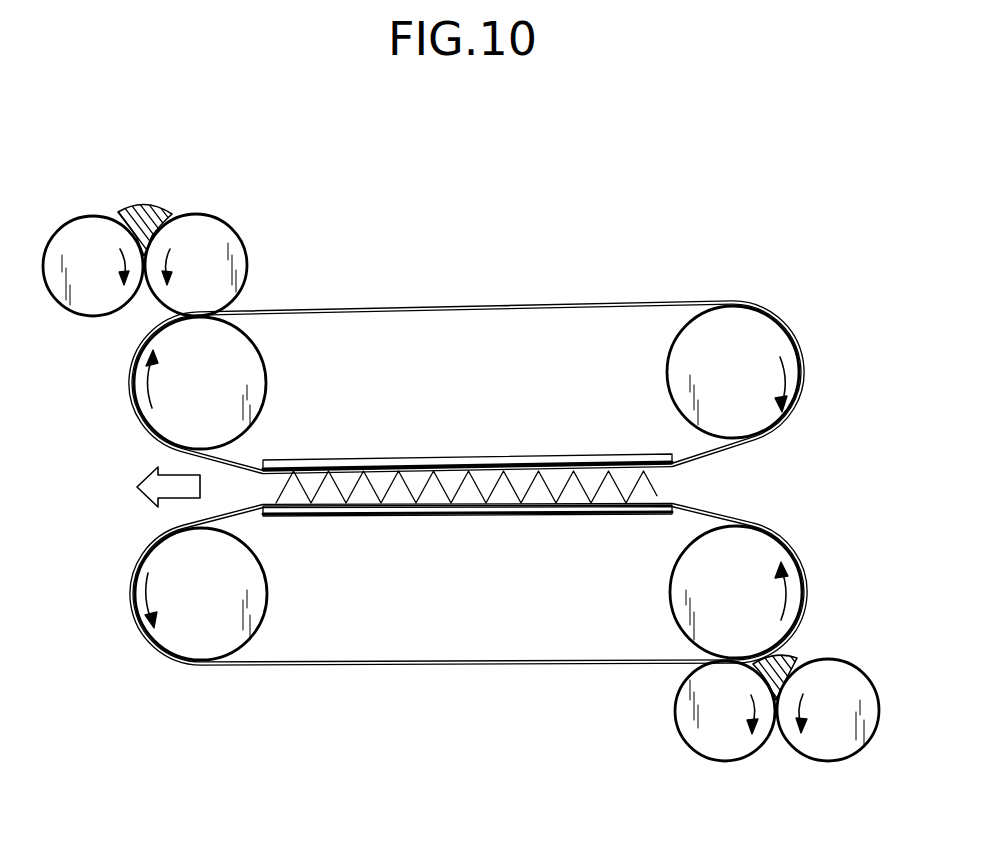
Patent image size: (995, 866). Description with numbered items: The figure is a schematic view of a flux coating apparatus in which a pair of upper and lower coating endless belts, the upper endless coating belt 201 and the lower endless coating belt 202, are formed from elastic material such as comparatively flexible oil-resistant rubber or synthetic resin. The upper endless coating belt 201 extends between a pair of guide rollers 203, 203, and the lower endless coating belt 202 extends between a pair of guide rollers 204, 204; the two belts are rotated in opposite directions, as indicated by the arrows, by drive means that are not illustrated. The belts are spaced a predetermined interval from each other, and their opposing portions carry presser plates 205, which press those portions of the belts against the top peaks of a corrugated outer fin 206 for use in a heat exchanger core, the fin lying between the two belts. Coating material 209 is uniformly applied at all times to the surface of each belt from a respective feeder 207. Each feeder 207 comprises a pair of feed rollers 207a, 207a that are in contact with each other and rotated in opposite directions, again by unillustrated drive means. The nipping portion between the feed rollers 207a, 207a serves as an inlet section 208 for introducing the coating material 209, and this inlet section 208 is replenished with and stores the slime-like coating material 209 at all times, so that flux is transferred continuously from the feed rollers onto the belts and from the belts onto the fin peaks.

The upper endless coating belt 201 is at (500, 311).
The lower endless coating belt 202 is at (447, 662).
The guide rollers 203 is at (267, 387).
The guide rollers 204 is at (267, 596).
The presser plates 205 is at (449, 459).
The corrugated outer fin 206 is at (658, 491).
The feeder 207 is at (248, 220).
The feed rollers 207a is at (248, 264).
The inlet section 208 is at (100, 200).
The coating material 209 is at (148, 200).